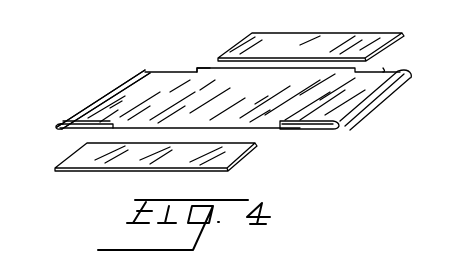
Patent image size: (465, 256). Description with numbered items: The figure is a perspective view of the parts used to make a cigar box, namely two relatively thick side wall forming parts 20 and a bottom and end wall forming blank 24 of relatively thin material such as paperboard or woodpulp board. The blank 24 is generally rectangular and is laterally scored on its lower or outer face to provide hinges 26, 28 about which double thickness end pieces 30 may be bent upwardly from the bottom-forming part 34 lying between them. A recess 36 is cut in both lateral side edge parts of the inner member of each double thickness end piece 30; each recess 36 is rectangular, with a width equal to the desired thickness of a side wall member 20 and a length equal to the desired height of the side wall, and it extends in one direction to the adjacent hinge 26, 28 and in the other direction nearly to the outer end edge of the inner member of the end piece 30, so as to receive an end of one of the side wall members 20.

The side wall forming part 20 is at (350, 38).
The bottom and end wall forming blank 24 is at (117, 85).
The hinge 26 is at (174, 85).
The hinge 28 is at (300, 114).
The double thickness end piece 30 is at (103, 104).
The bottom-forming part 34 is at (228, 98).
The recess 36 is at (383, 67).